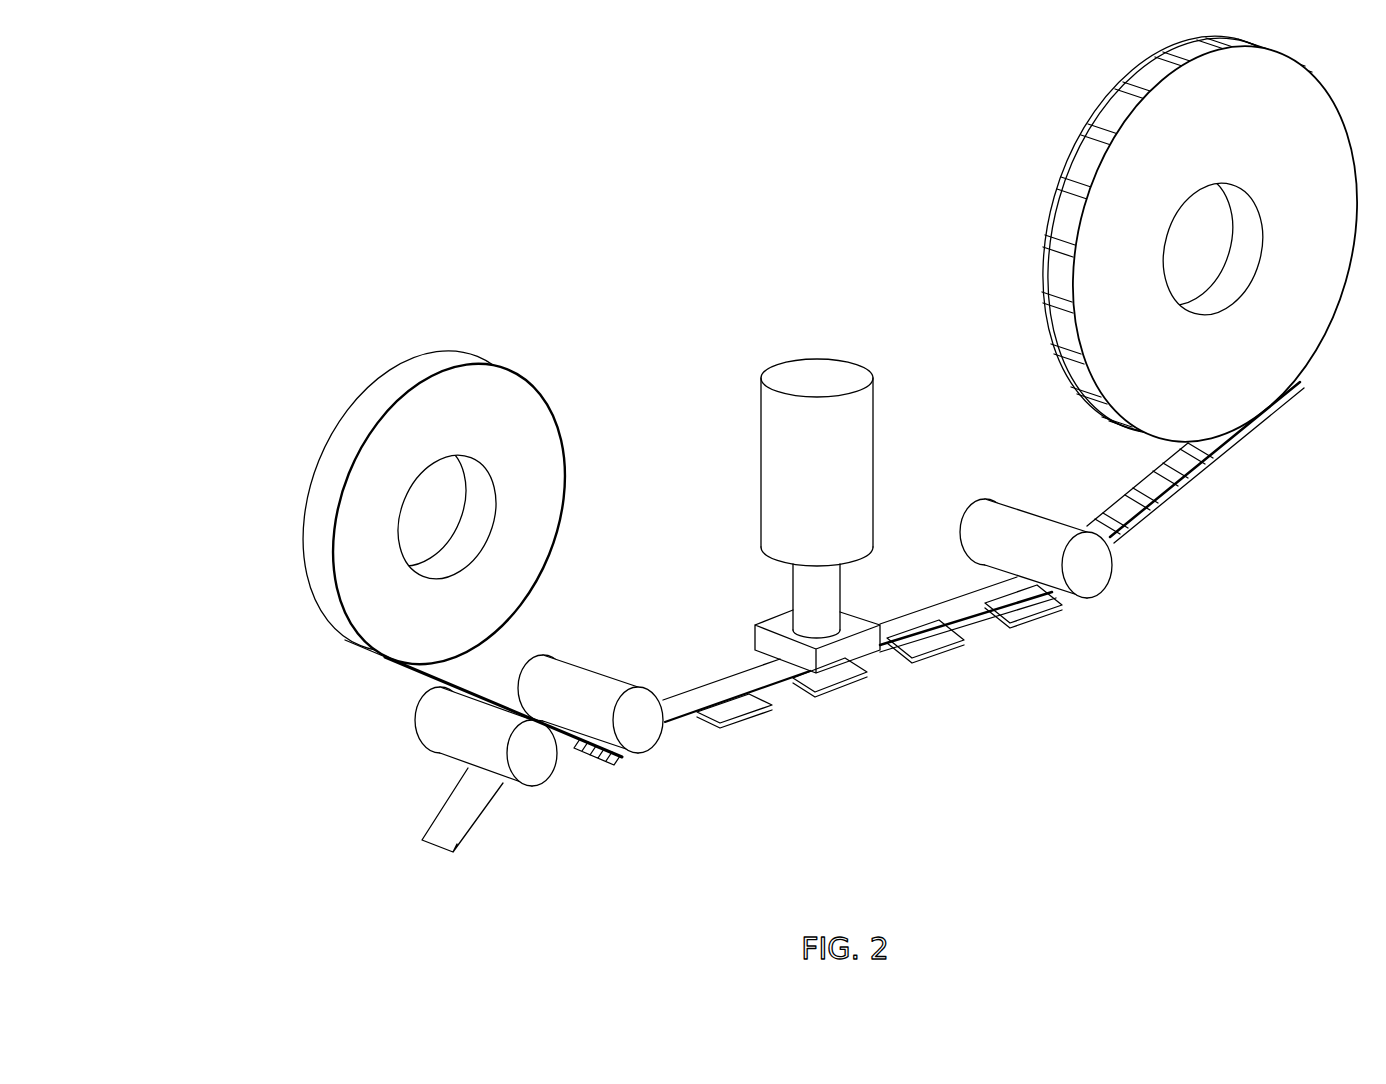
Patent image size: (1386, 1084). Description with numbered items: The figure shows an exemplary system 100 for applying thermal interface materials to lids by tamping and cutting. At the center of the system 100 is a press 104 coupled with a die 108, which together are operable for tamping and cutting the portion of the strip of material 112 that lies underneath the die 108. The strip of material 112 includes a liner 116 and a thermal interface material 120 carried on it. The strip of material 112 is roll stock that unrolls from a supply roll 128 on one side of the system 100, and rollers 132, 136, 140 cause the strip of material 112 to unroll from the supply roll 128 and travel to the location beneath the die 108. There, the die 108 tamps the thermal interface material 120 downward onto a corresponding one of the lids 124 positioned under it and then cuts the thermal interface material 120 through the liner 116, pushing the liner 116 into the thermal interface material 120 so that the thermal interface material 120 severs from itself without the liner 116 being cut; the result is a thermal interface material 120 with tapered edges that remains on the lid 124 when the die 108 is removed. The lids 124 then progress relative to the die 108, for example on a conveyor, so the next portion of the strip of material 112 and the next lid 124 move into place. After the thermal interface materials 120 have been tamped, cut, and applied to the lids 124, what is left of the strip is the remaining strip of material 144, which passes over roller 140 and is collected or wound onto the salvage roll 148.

The system 100 is at (794, 443).
The press 104 is at (762, 375).
The die 108 is at (810, 612).
The strip of material 112 is at (773, 689).
The liner 116 is at (727, 684).
The thermal interface material 120 is at (945, 643).
The lids 124 is at (665, 741).
The supply roll 128 is at (348, 425).
The roller 132 is at (413, 717).
The roller 136 is at (641, 722).
The roller 140 is at (990, 510).
The remaining strip of material 144 is at (953, 603).
The salvage roll 148 is at (1058, 195).